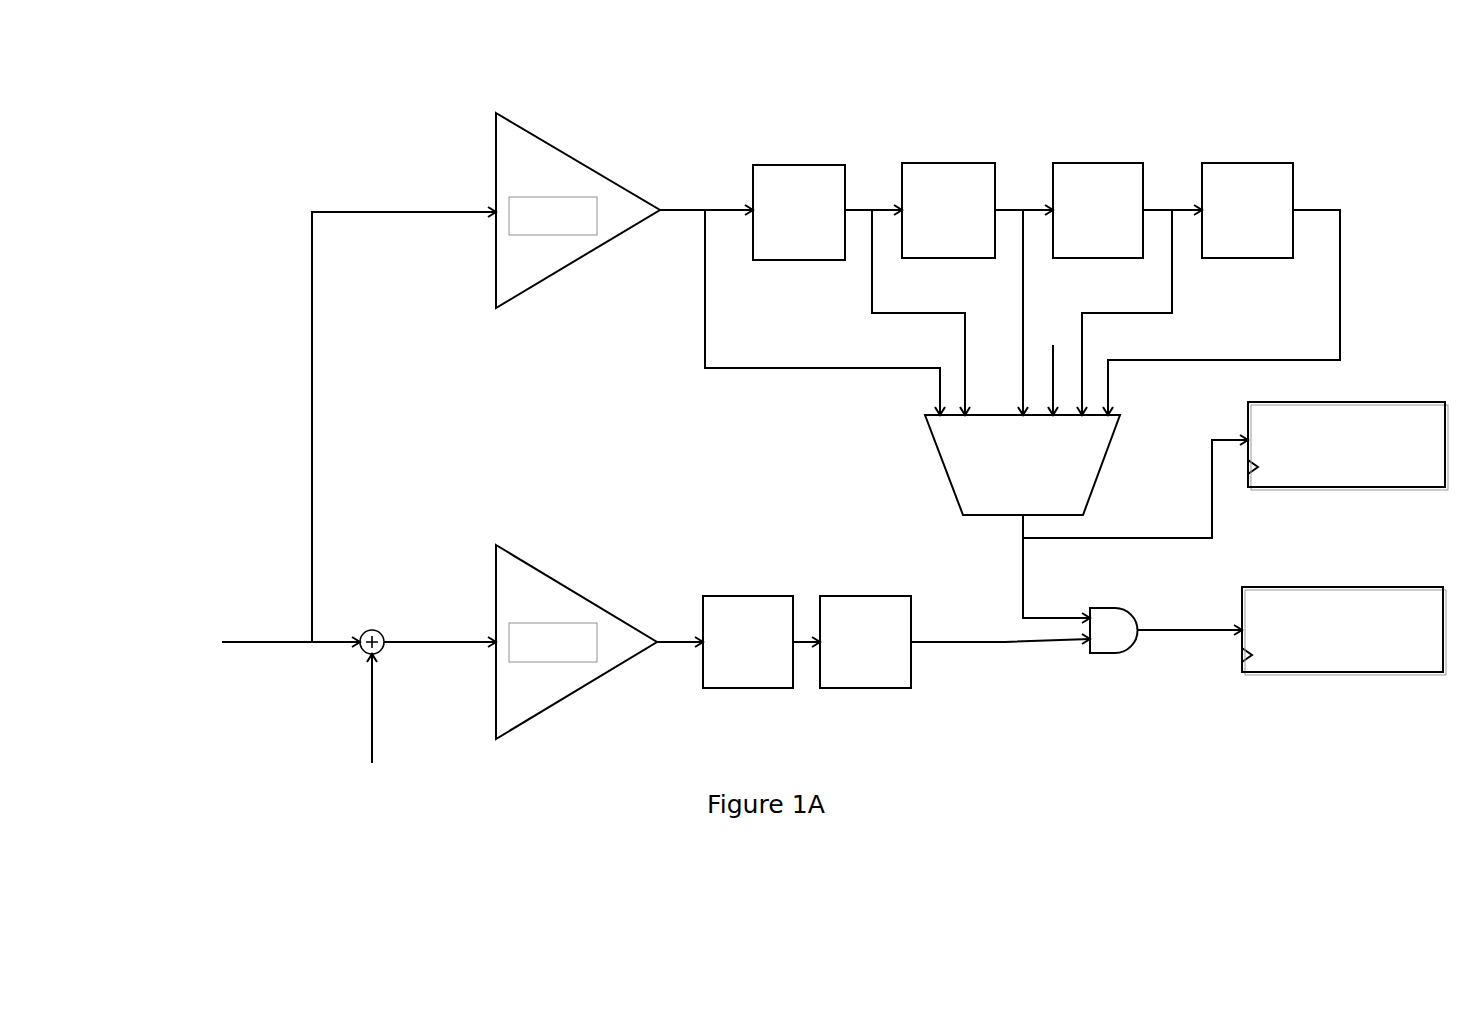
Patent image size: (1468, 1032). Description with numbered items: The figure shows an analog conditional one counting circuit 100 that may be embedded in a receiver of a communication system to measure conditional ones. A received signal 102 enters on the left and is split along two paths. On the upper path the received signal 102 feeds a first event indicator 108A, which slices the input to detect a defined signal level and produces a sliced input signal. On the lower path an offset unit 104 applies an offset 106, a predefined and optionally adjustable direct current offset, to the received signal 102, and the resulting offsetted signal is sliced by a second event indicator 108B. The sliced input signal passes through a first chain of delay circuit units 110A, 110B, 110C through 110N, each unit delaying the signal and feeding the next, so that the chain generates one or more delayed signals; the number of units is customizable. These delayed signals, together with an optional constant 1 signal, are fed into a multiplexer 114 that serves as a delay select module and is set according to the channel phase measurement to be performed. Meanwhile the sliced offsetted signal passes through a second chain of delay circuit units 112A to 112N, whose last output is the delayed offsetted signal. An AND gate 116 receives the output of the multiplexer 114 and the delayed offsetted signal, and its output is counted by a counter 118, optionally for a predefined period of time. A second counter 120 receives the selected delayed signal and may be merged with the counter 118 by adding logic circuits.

The analog conditional one counting circuit 100 is at (143, 57).
The received signal 102 is at (152, 608).
The offset unit 104 is at (382, 620).
The offset 106 is at (350, 720).
The first event indicator 108A is at (567, 153).
The second event indicator 108B is at (567, 583).
The first delay circuit unit 110A is at (797, 162).
The delay circuit unit 110B is at (1000, 133).
The delay circuit unit 110C is at (1090, 162).
The delay circuit unit 110N is at (1245, 162).
The first delay circuit unit of second set 112A is at (733, 593).
The last delay circuit unit of second set 112N is at (848, 593).
The constant 1 signal 1 is at (1054, 365).
The multiplexer 114 is at (1090, 490).
The AND gate 116 is at (1118, 607).
The counter 118 is at (1325, 585).
The second counter 120 is at (1385, 400).